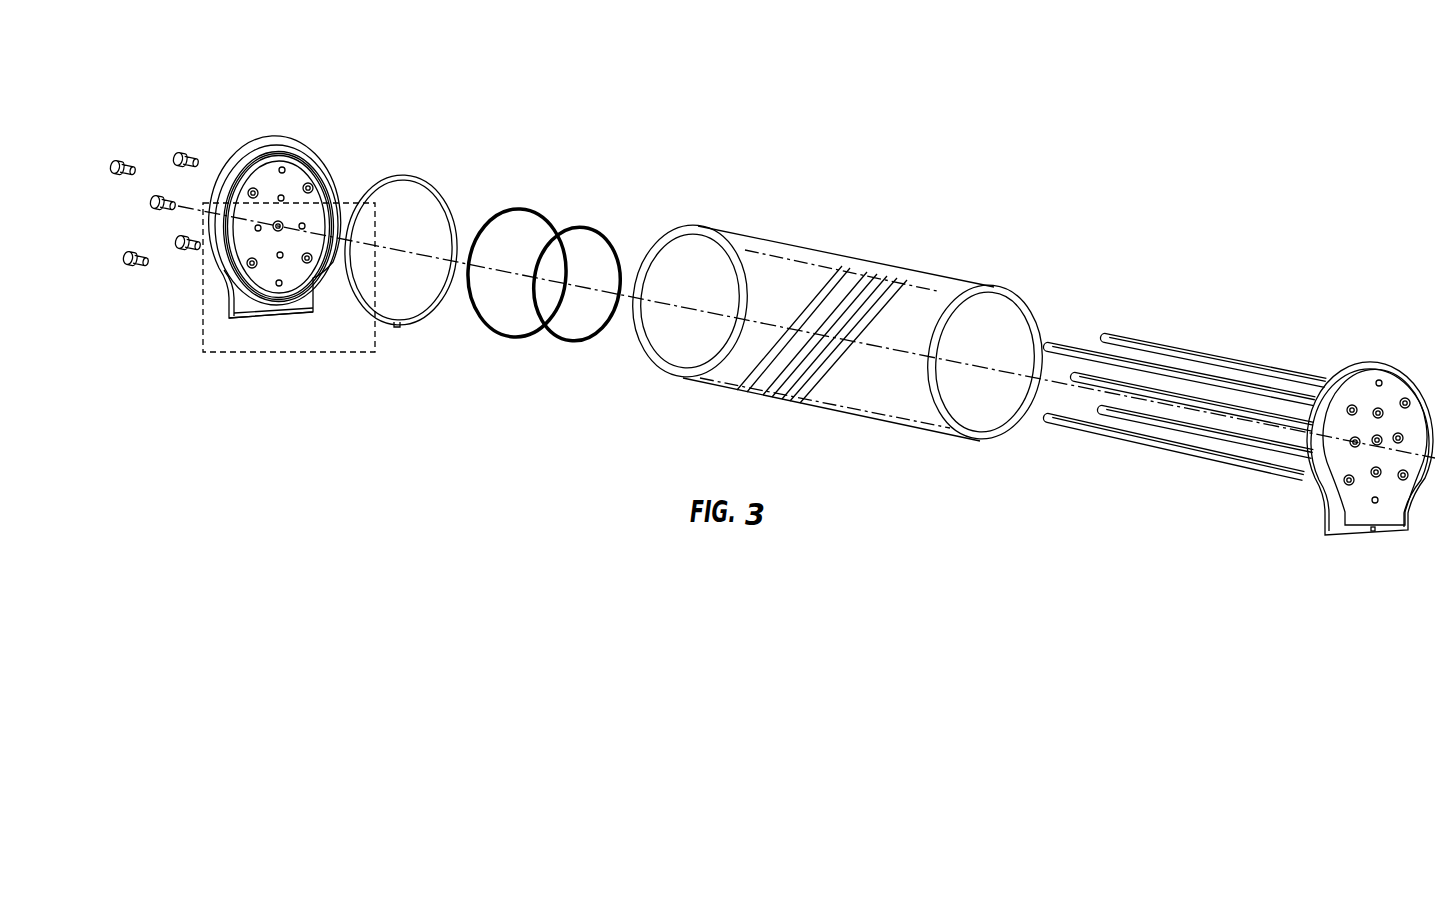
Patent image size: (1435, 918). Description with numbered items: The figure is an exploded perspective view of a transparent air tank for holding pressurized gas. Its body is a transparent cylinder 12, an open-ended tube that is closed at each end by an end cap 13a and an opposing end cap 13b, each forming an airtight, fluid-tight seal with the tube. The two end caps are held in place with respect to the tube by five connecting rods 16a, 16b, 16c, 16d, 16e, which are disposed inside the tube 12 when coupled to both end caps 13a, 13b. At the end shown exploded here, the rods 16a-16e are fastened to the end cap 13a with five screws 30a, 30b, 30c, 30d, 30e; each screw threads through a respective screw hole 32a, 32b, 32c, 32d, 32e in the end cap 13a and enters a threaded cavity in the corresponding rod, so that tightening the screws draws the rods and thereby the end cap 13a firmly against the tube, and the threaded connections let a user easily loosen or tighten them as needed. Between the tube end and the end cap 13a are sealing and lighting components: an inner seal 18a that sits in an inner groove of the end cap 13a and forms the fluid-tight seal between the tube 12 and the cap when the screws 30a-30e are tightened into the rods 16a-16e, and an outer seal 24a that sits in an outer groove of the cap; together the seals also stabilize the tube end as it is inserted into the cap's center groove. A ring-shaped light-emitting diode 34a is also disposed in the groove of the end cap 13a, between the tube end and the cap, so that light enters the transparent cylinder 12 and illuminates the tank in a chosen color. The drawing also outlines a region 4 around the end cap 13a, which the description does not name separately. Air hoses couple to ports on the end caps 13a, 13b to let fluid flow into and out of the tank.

The end cap 4 is at (340, 355).
The transparent cylinder 12 is at (821, 252).
The end cap 13a is at (300, 181).
The end cap 13b is at (1387, 362).
The connecting rod 16a is at (1257, 368).
The connecting rod 16b is at (1207, 377).
The connecting rod 16c is at (1152, 392).
The connecting rod 16d is at (1135, 436).
The connecting rod 16e is at (1193, 428).
The inner seal 18a is at (580, 228).
The outer seal 24a is at (517, 208).
The screw 30a is at (183, 152).
The screw 30b is at (115, 160).
The screw 30c is at (156, 195).
The screw 30d is at (128, 266).
The screw 30e is at (180, 250).
The screw hole 32a is at (311, 186).
The screw hole 32b is at (251, 190).
The screw hole 32c is at (278, 223).
The screw hole 32d is at (249, 265).
The screw hole 32e is at (310, 261).
The LED 34a is at (408, 177).